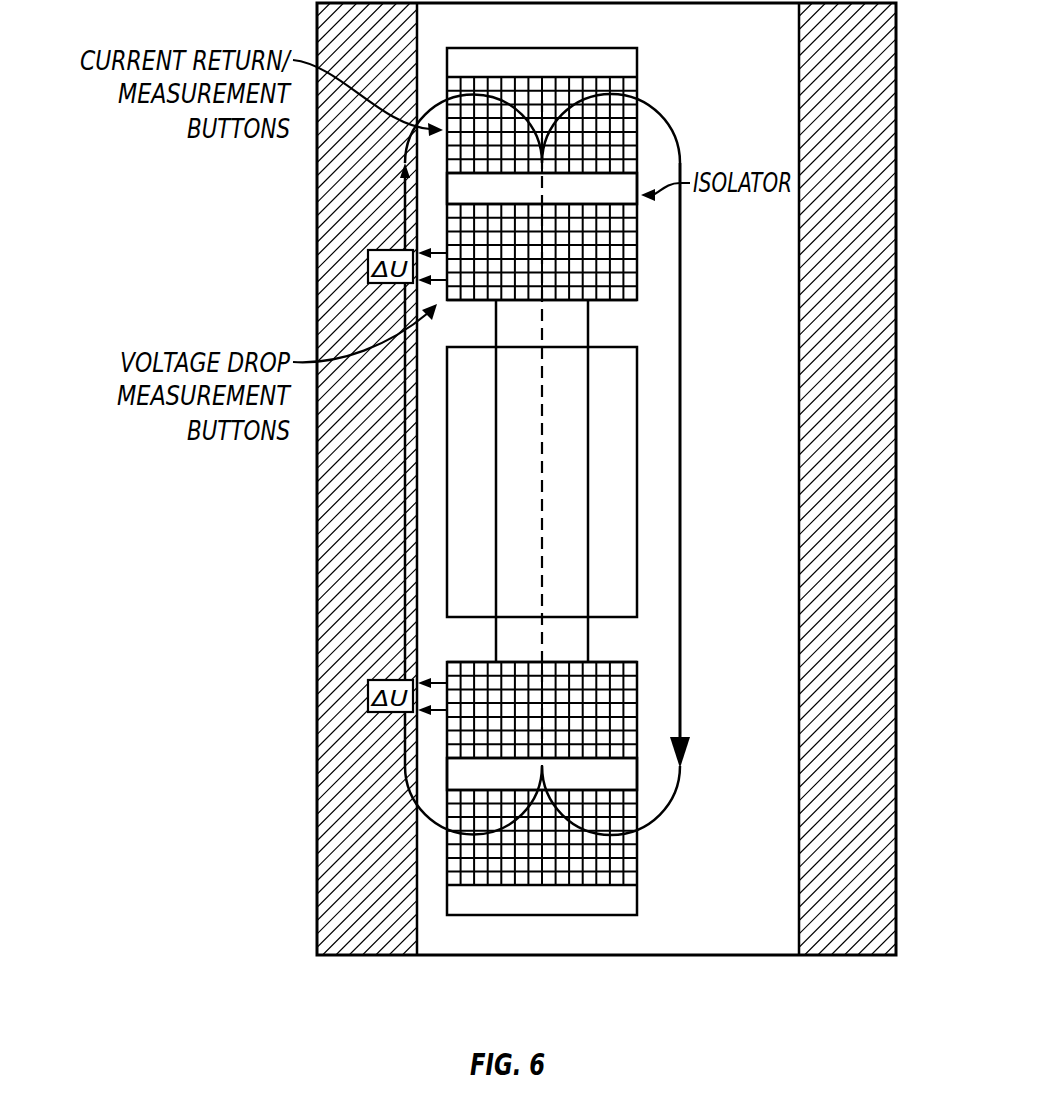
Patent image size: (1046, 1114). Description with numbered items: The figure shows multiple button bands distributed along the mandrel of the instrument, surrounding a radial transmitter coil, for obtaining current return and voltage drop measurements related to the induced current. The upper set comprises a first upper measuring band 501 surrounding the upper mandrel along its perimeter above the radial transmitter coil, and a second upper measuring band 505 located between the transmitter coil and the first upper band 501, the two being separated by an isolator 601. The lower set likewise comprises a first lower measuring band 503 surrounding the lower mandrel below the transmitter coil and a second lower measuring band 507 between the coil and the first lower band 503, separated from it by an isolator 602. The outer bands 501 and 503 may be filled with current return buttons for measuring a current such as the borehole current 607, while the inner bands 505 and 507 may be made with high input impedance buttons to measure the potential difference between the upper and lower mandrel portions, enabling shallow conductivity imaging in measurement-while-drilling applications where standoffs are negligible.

The first upper measuring band 501 is at (468, 117).
The second upper measuring band 505 is at (468, 238).
The second lower measuring band 507 is at (468, 710).
The first lower measuring band 503 is at (468, 851).
The isolator 601 is at (628, 183).
The isolator 602 is at (627, 773).
The borehole current 607 is at (680, 430).